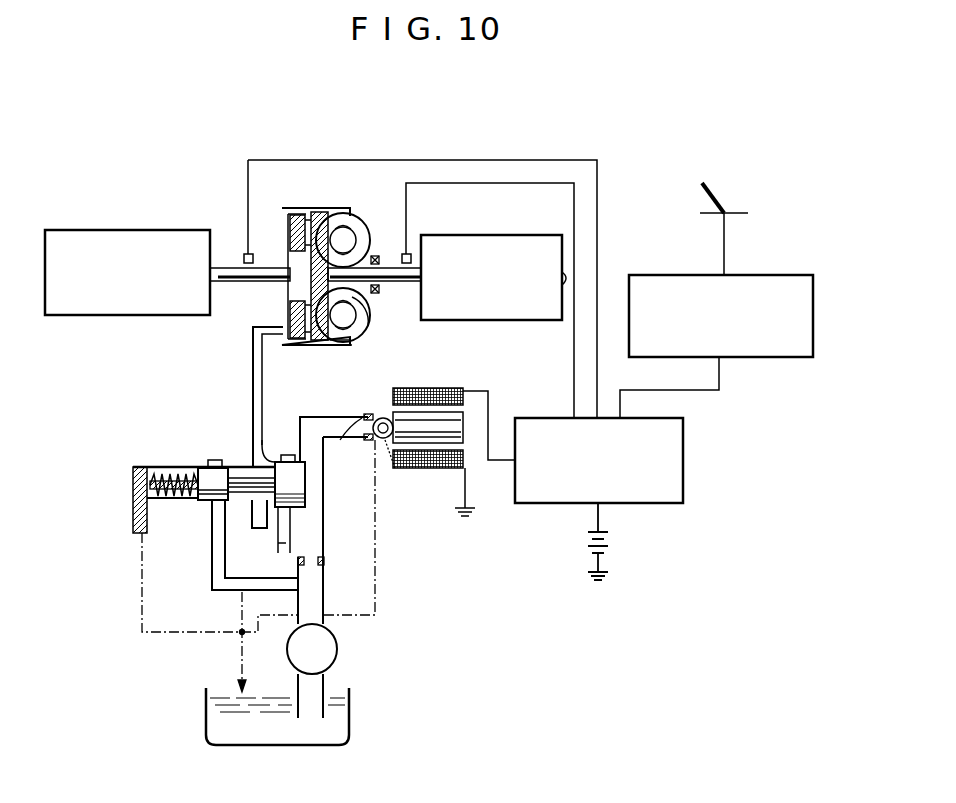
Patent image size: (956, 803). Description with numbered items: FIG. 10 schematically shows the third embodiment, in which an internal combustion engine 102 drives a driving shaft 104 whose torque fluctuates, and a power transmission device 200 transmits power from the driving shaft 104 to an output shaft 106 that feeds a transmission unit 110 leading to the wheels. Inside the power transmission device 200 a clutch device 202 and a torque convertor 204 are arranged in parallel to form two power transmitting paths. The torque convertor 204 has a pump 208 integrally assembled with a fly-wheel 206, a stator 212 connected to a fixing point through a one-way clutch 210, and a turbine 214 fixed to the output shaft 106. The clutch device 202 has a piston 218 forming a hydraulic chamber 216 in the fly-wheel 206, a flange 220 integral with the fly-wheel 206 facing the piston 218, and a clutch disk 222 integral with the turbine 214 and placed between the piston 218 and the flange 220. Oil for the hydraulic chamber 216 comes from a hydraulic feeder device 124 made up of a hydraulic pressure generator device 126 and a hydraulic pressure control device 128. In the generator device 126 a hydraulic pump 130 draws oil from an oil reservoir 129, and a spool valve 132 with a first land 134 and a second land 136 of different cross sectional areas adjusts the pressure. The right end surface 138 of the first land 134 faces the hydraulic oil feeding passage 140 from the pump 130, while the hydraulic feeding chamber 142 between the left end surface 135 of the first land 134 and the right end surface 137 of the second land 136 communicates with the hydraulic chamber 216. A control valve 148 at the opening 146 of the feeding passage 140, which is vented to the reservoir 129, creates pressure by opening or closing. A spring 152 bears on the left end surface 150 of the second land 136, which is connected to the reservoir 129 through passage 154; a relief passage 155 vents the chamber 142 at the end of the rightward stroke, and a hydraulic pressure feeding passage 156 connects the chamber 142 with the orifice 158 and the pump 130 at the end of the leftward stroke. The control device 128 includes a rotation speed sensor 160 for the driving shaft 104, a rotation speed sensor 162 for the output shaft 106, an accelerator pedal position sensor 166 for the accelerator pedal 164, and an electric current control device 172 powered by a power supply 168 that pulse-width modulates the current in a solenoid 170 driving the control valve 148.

The internal combustion engine 102 is at (152, 232).
The driving shaft 104 is at (233, 281).
The output shaft 106 is at (376, 283).
The transmission unit 110 is at (513, 235).
The hydraulic feeder device 124 is at (430, 628).
The hydraulic pressure generator device 126 is at (352, 556).
The hydraulic pressure control device 128 is at (608, 284).
The oil reservoir 129 is at (206, 713).
The hydraulic pump 130 is at (337, 651).
The spool valve 132 is at (180, 460).
The first land 134 is at (306, 478).
The left end surface of the first land 135 is at (274, 463).
The second land 136 is at (213, 467).
The right end surface of the second land 137 is at (234, 478).
The right end surface of the first land 138 is at (306, 500).
The hydraulic oil feeding passage 140 is at (323, 540).
The hydraulic feeding chamber 142 is at (229, 528).
The opening 146 is at (346, 445).
The control valve 148 is at (394, 455).
The left end surface of the second land 150 is at (196, 499).
The spring 152 is at (143, 468).
The passage 154 is at (140, 520).
The relief passage 155 is at (282, 540).
The hydraulic pressure feeding passage 156 is at (212, 583).
The orifice 158 is at (318, 566).
The rotation speed sensor 160 is at (246, 255).
The rotation speed sensor 162 is at (410, 254).
The accelerator pedal 164 is at (716, 195).
The accelerator pedal position sensor 166 is at (762, 358).
The power supply 168 is at (606, 540).
The solenoid 170 is at (455, 388).
The electric current control device 172 is at (683, 481).
The power transmission device 200 is at (358, 158).
The clutch device 202 is at (297, 207).
The torque convertor 204 is at (356, 207).
The fly-wheel 206 is at (298, 345).
The pump 208 is at (357, 336).
The one-way clutch 210 is at (372, 247).
The stator 212 is at (364, 303).
The turbine 214 is at (340, 341).
The hydraulic chamber 216 is at (282, 322).
The piston 218 is at (282, 336).
The flange 220 is at (345, 351).
The clutch disk 222 is at (313, 346).